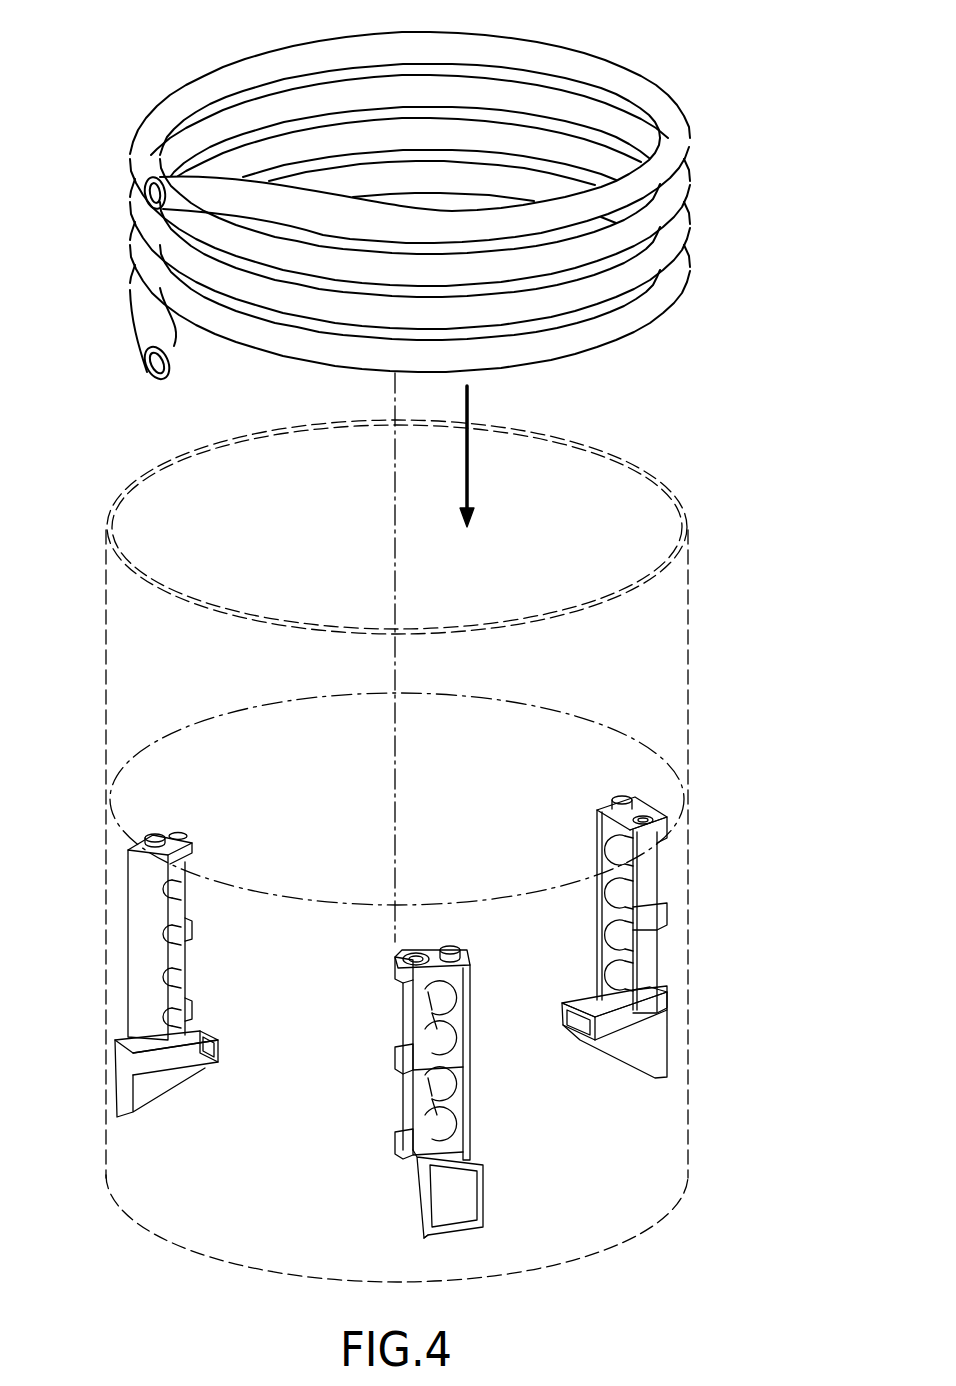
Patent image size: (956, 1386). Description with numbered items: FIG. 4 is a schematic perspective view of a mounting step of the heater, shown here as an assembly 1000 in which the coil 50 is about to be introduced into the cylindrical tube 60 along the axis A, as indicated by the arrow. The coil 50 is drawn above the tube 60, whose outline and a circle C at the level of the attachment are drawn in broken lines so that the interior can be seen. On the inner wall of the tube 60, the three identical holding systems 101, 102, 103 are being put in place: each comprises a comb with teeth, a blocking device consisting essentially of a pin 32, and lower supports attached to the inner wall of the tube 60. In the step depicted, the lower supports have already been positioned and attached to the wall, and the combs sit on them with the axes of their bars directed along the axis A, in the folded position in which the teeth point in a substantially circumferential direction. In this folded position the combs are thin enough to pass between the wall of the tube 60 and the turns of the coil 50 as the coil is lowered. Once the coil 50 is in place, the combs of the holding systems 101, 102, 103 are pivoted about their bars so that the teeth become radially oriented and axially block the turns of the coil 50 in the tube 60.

The system for coiling a tube 1000 is at (437, 648).
The coil 50 is at (165, 76).
The cylindrical tube 60 is at (164, 1240).
The pin 32 is at (184, 958).
The holding system 101 is at (148, 941).
The holding system 102 is at (564, 940).
The holding system 103 is at (453, 1093).
The axis A is at (392, 398).
The circle / coiling path C is at (229, 708).